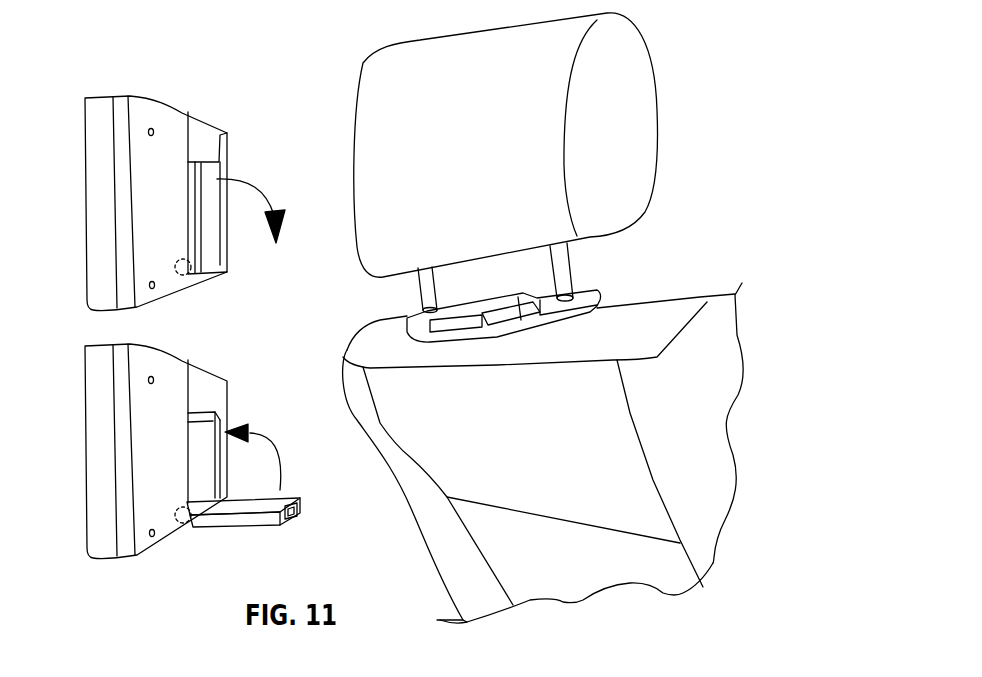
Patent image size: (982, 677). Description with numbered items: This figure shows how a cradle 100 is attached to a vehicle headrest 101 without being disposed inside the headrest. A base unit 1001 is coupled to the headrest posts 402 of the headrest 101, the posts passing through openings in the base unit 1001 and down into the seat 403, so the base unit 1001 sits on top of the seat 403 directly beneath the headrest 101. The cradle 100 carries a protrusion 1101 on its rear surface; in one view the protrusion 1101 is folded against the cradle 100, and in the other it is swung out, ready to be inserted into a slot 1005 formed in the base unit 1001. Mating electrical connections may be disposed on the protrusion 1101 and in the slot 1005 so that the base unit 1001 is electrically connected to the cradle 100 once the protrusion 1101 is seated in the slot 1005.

The cradle 100 is at (100, 253).
The protrusion 1101 is at (218, 252).
The headrest 101 is at (633, 78).
The headrest posts 402 is at (567, 275).
The seat 403 is at (715, 305).
The base unit 1001 is at (520, 320).
The slot 1005 is at (450, 327).